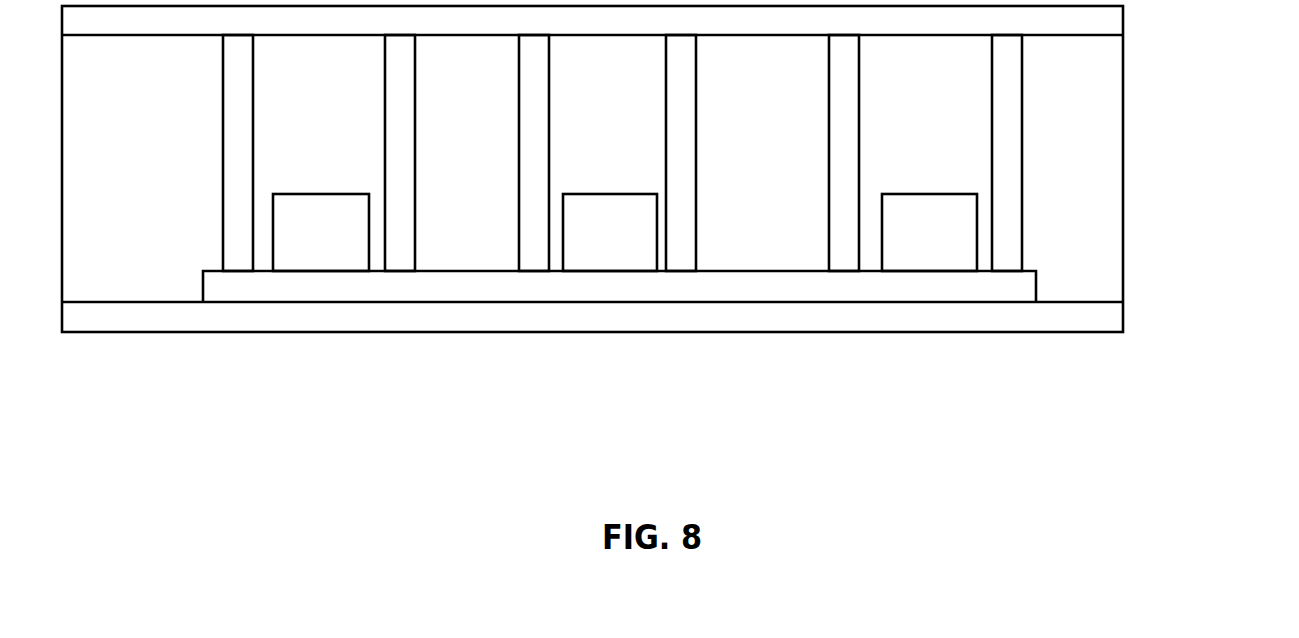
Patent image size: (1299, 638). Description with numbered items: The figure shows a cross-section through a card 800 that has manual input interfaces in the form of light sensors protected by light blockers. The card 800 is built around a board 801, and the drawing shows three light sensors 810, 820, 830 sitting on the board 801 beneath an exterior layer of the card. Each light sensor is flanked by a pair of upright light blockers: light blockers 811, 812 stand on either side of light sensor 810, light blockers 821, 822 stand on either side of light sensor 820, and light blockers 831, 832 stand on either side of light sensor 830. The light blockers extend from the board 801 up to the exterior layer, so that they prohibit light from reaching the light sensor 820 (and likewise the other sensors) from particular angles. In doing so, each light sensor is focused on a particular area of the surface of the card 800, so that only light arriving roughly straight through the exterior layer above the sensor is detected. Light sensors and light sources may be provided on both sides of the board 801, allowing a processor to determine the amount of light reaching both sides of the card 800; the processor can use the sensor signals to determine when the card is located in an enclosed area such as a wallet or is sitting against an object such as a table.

The card 800 is at (1258, 33).
The board 801 is at (203, 284).
The light sensor 810 is at (320, 194).
The light blocker 811 is at (223, 174).
The light blocker 812 is at (385, 115).
The light sensor 820 is at (610, 194).
The light blocker 821 is at (519, 176).
The light blocker 822 is at (666, 126).
The light sensor 830 is at (934, 194).
The light blocker 831 is at (829, 162).
The light blocker 832 is at (992, 115).